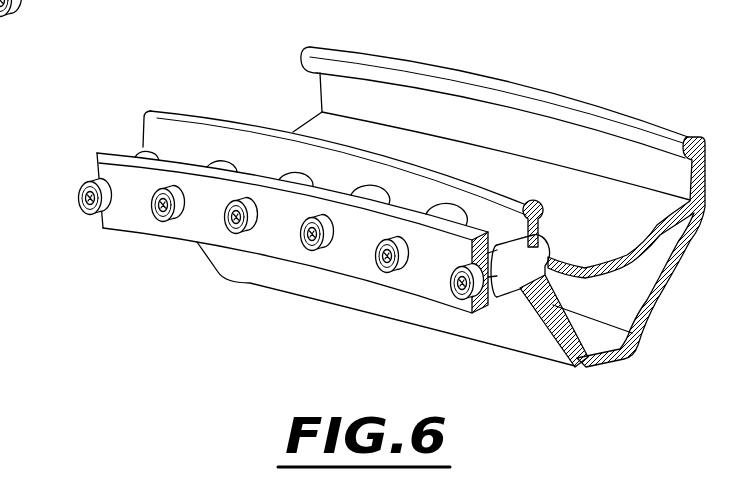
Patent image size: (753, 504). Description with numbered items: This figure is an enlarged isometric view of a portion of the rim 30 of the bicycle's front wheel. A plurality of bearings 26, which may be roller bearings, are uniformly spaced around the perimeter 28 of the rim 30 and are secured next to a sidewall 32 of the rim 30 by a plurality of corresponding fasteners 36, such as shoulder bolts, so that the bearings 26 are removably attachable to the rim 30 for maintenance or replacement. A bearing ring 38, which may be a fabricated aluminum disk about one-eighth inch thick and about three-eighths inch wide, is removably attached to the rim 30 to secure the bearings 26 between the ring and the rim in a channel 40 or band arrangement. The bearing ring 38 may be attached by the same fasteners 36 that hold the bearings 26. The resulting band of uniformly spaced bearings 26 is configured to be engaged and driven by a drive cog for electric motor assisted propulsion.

The bearings 26 is at (518, 270).
The perimeter 28 is at (420, 188).
The rim 30 is at (585, 150).
The sidewall 32 is at (443, 190).
The fasteners 36 is at (80, 204).
The bearing ring 38 is at (128, 182).
The channel 40 is at (128, 108).